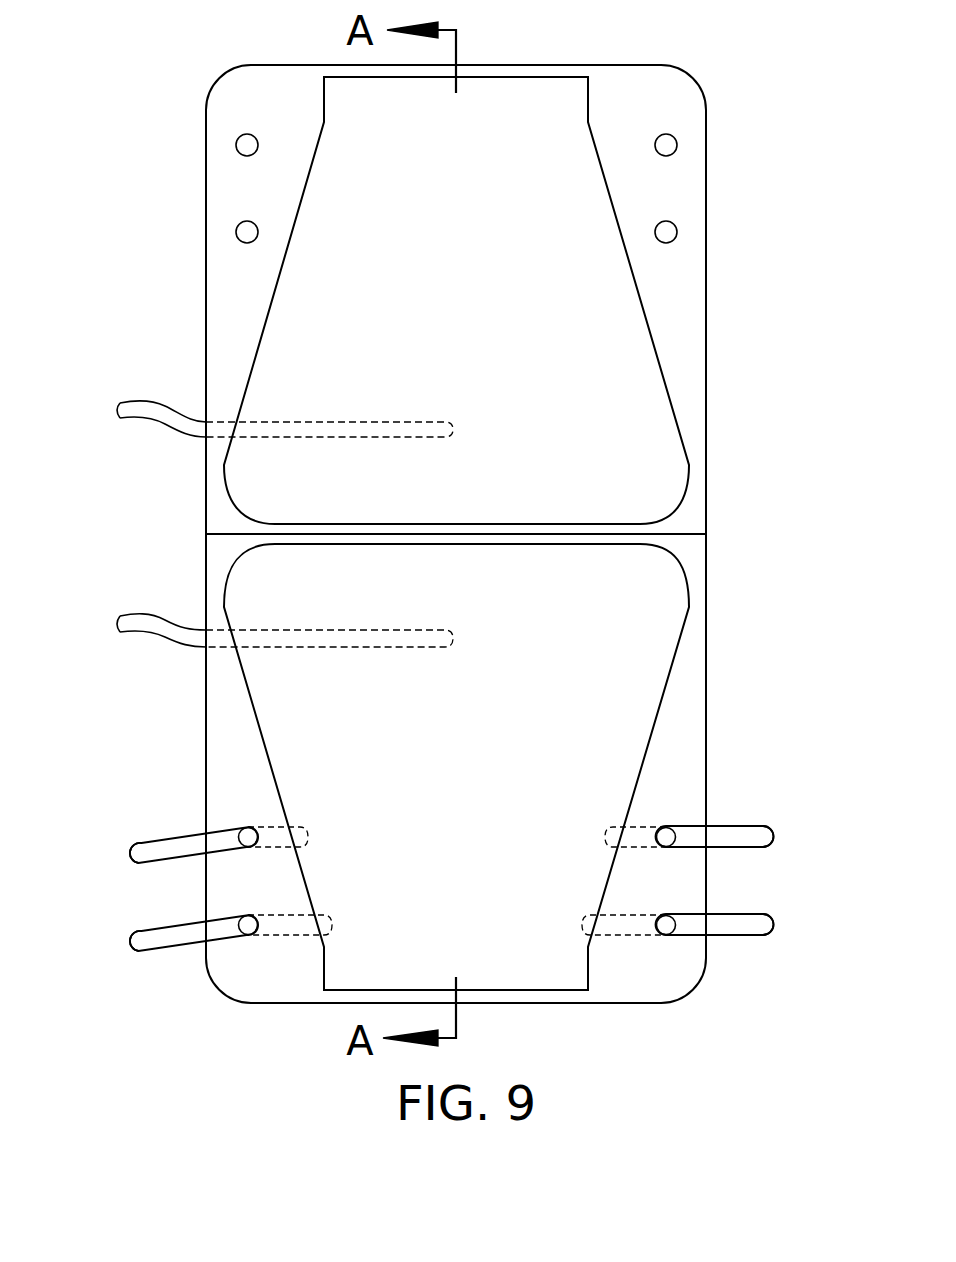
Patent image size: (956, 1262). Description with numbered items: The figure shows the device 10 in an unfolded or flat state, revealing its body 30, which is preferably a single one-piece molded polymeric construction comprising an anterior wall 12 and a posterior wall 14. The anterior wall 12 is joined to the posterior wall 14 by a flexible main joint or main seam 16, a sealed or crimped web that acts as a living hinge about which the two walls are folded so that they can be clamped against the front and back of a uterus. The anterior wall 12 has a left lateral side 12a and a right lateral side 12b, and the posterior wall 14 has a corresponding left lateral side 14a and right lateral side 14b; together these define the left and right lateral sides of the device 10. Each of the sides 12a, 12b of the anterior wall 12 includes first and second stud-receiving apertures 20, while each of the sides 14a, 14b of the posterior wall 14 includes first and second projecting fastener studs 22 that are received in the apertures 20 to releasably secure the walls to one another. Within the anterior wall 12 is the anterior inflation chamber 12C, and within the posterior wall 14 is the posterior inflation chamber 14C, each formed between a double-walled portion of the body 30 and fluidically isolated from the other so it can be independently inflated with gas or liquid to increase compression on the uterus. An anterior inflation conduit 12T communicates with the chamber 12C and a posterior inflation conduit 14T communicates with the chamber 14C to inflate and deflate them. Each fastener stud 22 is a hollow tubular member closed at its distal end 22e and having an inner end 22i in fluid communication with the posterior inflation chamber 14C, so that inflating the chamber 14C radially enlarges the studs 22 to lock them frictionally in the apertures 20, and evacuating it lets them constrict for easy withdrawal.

The device 10 is at (211, 274).
The anterior wall 12 is at (670, 333).
The left lateral side of the anterior wall 12a is at (232, 98).
The right lateral side of the anterior wall 12b is at (680, 100).
The anterior inflation chamber 12C is at (275, 335).
The anterior inflation conduit 12T is at (152, 417).
The posterior wall 14 is at (690, 727).
The left lateral side of the posterior wall 14a is at (263, 983).
The right lateral side of the posterior wall 14b is at (648, 982).
The posterior inflation chamber 14C is at (493, 953).
The posterior inflation conduit 14T is at (150, 626).
The main joint or main seam 16 is at (697, 541).
The stud-receiving aperture 20 is at (245, 145).
The fastener stud 22 is at (172, 835).
The distal end of the fastener stud 22e is at (135, 850).
The inner end of the fastener stud 22i is at (308, 828).
The body 30 is at (216, 548).